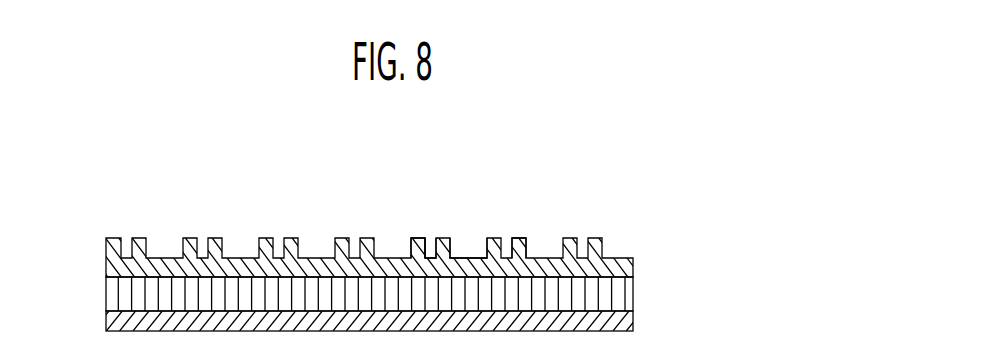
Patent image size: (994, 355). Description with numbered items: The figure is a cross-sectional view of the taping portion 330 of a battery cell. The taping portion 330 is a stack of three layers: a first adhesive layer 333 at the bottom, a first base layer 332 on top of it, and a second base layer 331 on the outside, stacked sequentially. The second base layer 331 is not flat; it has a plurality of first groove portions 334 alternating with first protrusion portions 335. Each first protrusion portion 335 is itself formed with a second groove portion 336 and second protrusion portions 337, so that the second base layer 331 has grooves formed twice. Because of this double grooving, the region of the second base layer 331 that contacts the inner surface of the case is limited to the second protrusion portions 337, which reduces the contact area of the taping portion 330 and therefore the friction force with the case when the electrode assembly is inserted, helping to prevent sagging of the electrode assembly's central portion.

The taping portion 330 is at (417, 249).
The second base layer 331 is at (392, 218).
The first base layer 332 is at (622, 288).
The first adhesive layer 333 is at (399, 325).
The first groove portion 334 is at (472, 253).
The first protrusion portion 335 is at (523, 235).
The second groove portion 336 is at (431, 243).
The second protrusion portion 337 is at (423, 237).